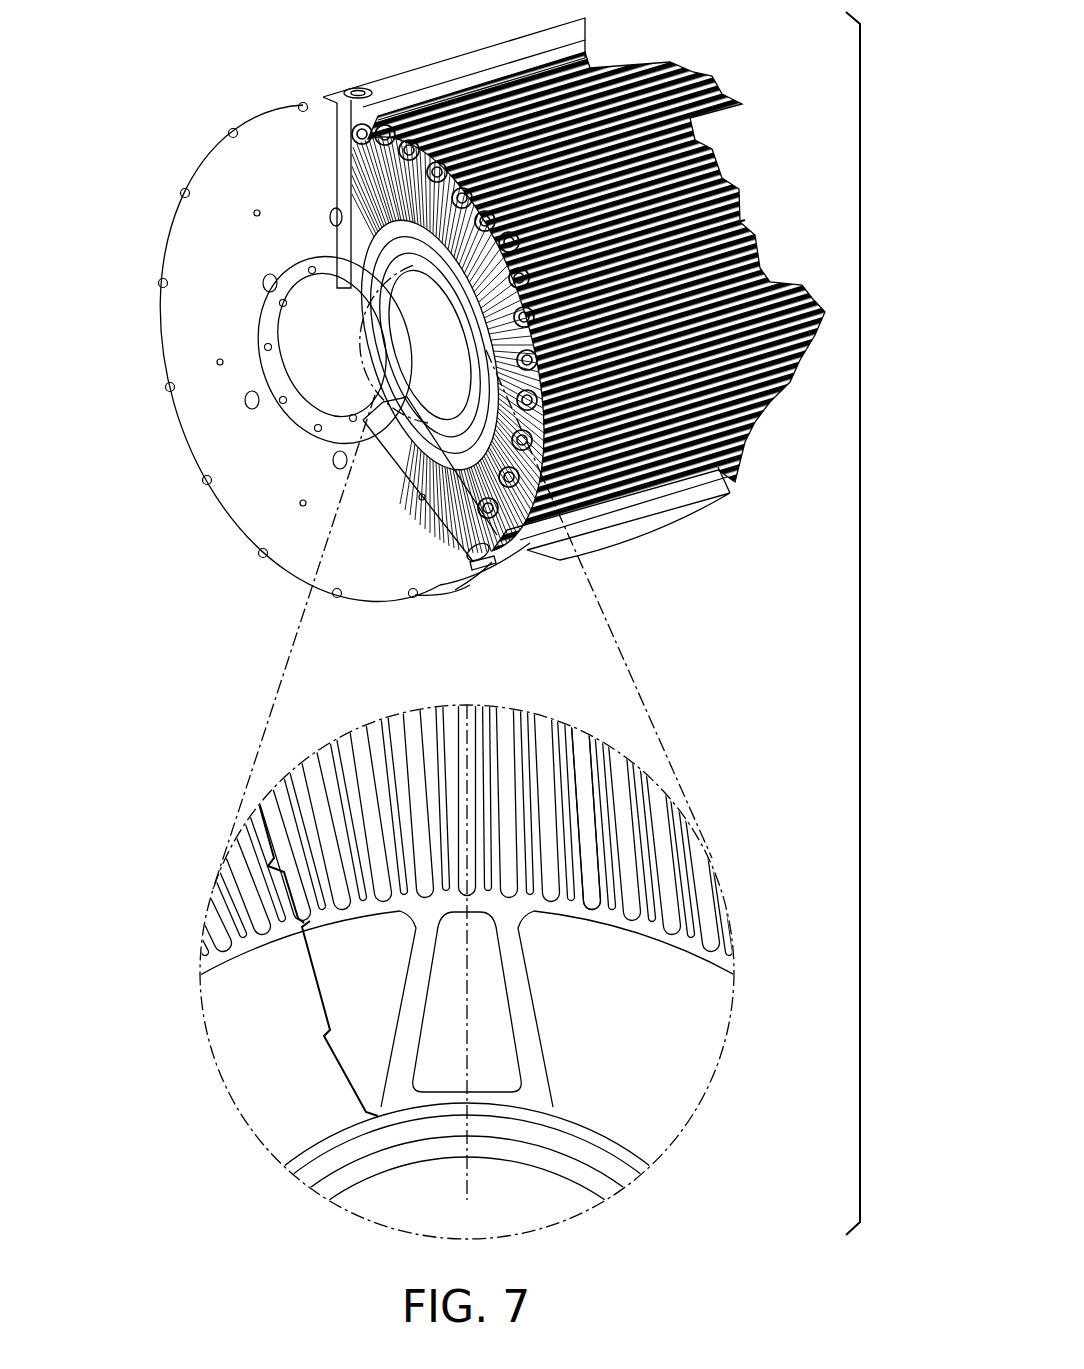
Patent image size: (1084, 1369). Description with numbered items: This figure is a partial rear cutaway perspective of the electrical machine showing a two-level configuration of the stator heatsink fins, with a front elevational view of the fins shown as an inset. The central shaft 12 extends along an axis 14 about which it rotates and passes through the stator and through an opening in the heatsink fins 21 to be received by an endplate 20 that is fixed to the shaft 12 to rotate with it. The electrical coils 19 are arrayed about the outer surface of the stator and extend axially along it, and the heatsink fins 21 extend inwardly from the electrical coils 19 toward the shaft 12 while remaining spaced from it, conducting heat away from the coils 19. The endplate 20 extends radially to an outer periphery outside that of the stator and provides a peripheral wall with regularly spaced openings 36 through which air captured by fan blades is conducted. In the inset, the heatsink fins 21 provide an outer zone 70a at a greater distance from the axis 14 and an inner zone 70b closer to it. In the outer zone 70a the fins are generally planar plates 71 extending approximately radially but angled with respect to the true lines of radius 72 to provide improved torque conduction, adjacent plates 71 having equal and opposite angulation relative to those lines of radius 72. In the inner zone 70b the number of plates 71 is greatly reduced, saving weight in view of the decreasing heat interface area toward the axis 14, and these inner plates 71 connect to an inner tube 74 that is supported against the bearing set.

The central shaft 12 is at (296, 342).
The axis 14 is at (546, 1219).
The electrical coils 19 is at (722, 236).
The endplate 20 is at (214, 166).
The heatsink fins 21 is at (378, 187).
The openings 36 is at (462, 557).
The outer zone 70a is at (270, 862).
The inner zone 70b is at (378, 1014).
The plates 71 is at (645, 796).
The true lines of radius 72 is at (470, 762).
The inner tube 74 is at (583, 1153).